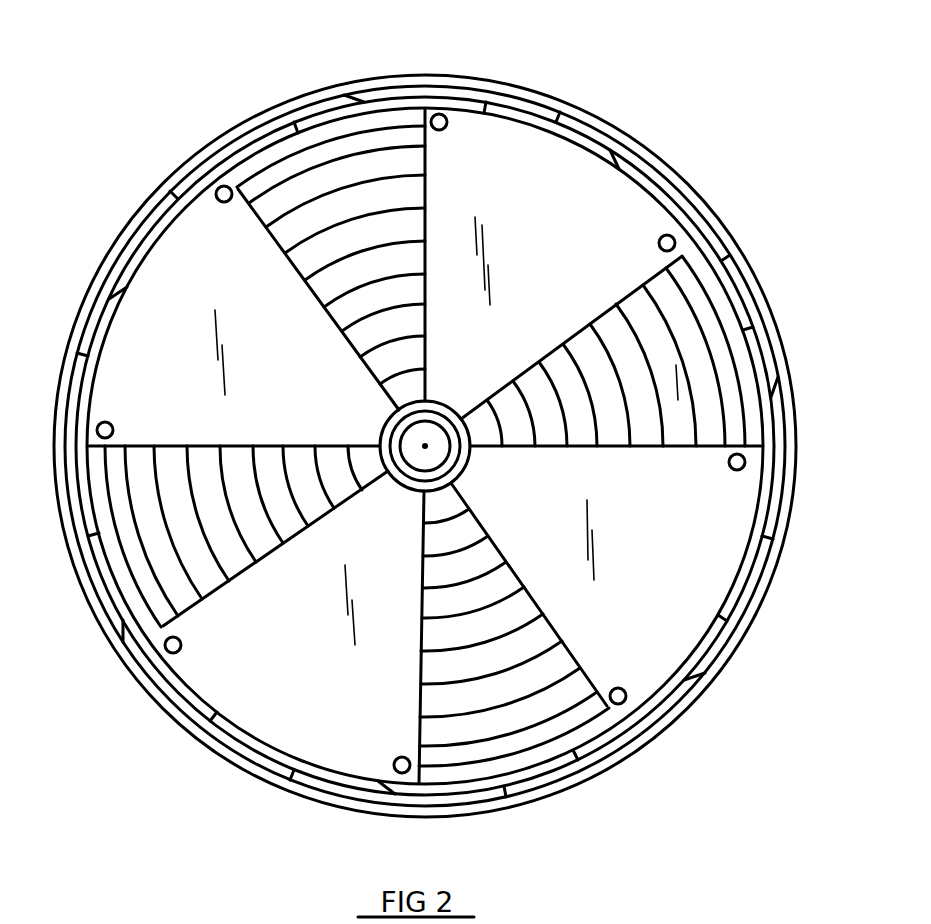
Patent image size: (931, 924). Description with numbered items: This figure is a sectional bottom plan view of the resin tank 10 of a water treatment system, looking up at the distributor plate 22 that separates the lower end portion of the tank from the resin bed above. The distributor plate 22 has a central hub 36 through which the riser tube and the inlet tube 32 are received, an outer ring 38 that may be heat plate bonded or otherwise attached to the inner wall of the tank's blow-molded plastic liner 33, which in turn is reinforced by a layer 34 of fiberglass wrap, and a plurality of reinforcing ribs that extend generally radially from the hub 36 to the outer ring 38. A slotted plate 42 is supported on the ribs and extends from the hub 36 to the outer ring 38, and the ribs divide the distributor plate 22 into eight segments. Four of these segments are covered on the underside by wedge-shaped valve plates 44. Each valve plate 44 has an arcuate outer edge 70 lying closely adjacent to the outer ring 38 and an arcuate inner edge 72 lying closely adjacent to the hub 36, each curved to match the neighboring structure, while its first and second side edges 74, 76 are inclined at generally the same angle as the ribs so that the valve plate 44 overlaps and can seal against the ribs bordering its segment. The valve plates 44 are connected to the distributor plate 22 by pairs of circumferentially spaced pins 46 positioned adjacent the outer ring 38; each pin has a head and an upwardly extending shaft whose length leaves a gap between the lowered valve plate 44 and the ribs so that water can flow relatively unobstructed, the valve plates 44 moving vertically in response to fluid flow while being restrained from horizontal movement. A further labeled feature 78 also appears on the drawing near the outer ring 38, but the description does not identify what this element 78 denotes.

The pressure vessel or resin tank 10 is at (612, 792).
The distributor plate 22 is at (340, 167).
The inlet tube 32 is at (438, 407).
The blow-molded plastic liner 33 is at (635, 138).
The layer of fiberglass wrap 34 is at (678, 163).
The central hub 36 is at (387, 425).
The outer ring 38 is at (692, 185).
The slotted plate 42 is at (490, 727).
The valve plate 44 is at (542, 148).
The pins 46 is at (462, 108).
The outer edge 70 is at (735, 655).
The inner edge 72 is at (470, 476).
The first side edge 74 is at (685, 440).
The second side edge 76 is at (567, 690).
The intermediate rim ring 78 is at (740, 578).